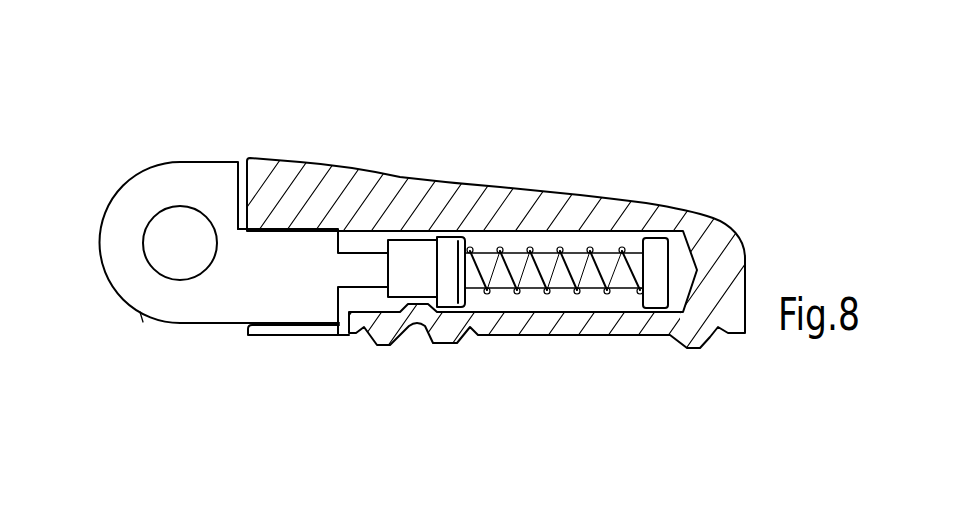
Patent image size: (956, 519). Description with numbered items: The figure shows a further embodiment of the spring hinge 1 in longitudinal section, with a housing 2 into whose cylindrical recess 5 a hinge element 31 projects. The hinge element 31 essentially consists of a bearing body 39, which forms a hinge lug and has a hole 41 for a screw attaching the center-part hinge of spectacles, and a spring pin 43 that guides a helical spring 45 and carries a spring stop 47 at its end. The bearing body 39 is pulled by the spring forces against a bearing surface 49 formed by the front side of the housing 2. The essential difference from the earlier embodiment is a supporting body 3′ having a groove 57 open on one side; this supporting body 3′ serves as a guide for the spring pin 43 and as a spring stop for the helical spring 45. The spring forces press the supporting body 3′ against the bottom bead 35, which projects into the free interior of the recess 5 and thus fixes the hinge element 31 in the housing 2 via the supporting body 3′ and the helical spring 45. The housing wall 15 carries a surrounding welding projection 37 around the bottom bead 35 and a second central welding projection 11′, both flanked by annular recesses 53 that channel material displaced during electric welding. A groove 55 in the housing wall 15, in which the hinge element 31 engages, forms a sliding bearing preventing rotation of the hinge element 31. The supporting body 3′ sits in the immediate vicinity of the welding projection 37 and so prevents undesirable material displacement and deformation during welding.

The spring hinge 1 is at (297, 158).
The housing 2 is at (437, 200).
The supporting body 3′ is at (413, 274).
The cylindrical recess 5 is at (515, 243).
The second central welding projection 11′ is at (697, 345).
The housing wall 15 is at (560, 320).
The hinge element 31 is at (142, 315).
The bottom bead 35 is at (418, 326).
The welding projection 37 is at (392, 348).
The bearing body 39 is at (150, 190).
The hole 41 is at (178, 228).
The spring pin 43 is at (380, 265).
The helical spring 45 is at (540, 268).
The spring stop 47 is at (653, 267).
The bearing surface 49 is at (238, 178).
The annular recesses 53 is at (365, 334).
The groove 55 is at (270, 330).
The groove open on one side 57 is at (415, 238).